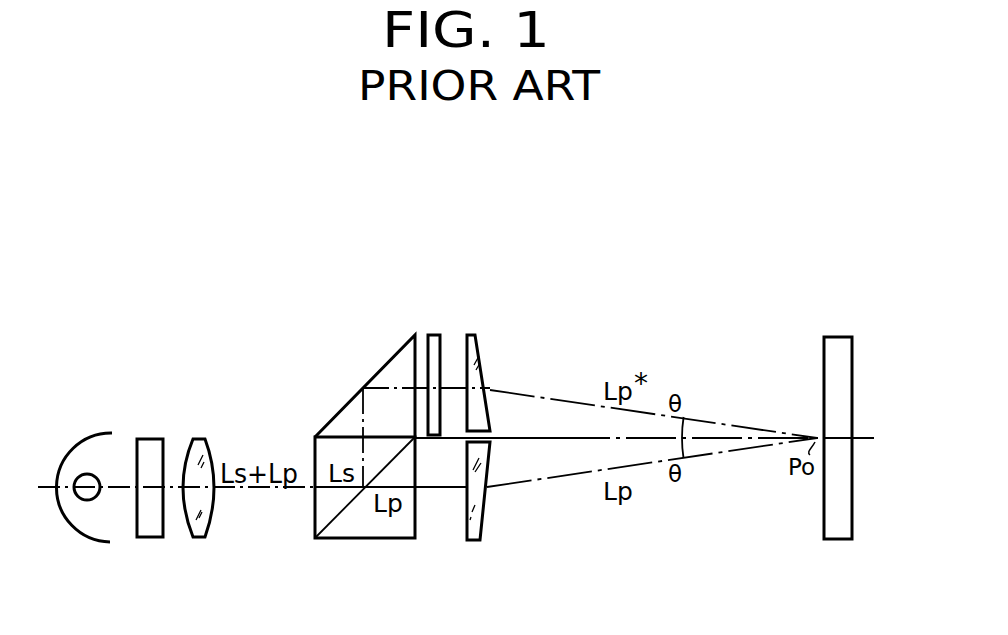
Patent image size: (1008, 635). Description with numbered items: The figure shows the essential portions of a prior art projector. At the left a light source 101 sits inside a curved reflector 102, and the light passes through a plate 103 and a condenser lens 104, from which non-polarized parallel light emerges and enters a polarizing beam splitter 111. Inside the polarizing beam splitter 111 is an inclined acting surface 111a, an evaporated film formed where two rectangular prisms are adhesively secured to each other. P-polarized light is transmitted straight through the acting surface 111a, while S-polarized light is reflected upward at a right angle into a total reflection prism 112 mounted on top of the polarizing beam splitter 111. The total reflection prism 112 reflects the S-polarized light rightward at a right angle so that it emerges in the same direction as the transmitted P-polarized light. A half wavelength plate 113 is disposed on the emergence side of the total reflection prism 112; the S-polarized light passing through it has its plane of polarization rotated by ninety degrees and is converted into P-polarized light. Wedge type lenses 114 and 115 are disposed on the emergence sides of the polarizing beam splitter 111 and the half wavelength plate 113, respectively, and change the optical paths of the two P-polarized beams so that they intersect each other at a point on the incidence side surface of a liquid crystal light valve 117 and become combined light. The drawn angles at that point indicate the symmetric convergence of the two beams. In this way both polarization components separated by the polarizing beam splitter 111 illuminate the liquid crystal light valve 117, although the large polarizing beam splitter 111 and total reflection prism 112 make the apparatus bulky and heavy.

The light source 101 is at (85, 500).
The reflector 102 is at (82, 452).
The filter plate 103 is at (148, 537).
The condenser lens 104 is at (203, 537).
The polarizing beam splitter 111 is at (330, 533).
The acting surface 111a is at (355, 500).
The total reflection prism 112 is at (327, 420).
The half wavelength plate 113 is at (435, 336).
The wedge type lens 114 is at (477, 540).
The wedge type lens 115 is at (470, 336).
The liquid crystal light valve 117 is at (830, 337).